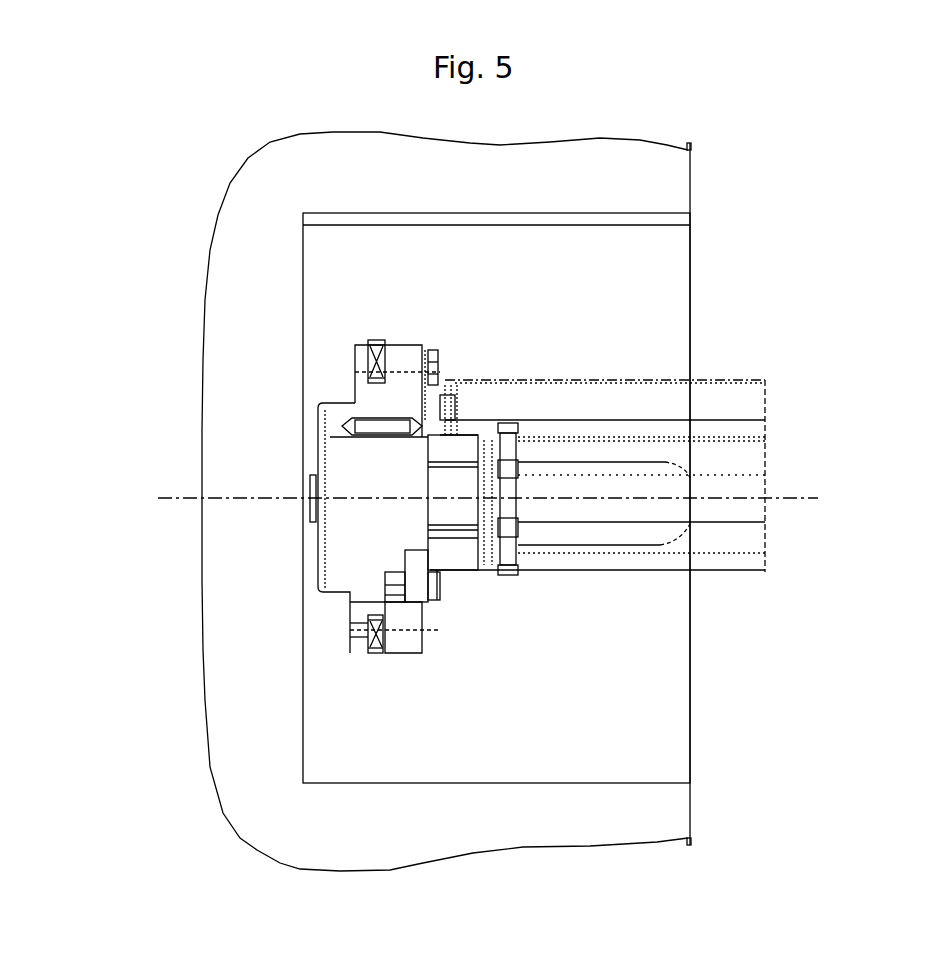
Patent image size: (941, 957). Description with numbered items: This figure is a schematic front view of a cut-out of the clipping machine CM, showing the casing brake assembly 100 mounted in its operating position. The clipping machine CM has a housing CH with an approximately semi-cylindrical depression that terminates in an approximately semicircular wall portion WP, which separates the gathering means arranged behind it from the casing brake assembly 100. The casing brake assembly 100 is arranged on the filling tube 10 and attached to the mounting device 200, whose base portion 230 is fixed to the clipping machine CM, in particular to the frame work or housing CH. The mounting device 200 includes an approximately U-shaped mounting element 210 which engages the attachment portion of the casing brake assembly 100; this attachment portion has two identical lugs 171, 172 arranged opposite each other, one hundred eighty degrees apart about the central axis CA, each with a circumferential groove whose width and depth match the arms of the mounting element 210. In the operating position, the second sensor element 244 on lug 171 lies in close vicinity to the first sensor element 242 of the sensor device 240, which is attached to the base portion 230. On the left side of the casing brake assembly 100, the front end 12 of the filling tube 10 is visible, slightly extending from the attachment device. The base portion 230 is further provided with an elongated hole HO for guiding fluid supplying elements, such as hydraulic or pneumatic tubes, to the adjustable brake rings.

The clipping machine CM is at (135, 163).
The housing CH is at (250, 238).
The semicircular wall portion WP is at (303, 283).
The casing brake assembly 100 is at (845, 195).
The mounting device 200 is at (826, 402).
The sensor device 240 is at (797, 325).
The second sensor element 244 is at (437, 398).
The first sensor element 242 is at (443, 407).
The base portion 230 is at (740, 543).
The elongated hole HO is at (632, 540).
The central axis CA is at (795, 497).
The filling tube 10 is at (740, 510).
The front end 12 is at (313, 507).
The lug 171 is at (405, 357).
The lug 172 is at (412, 645).
The mounting element 210 is at (372, 347).